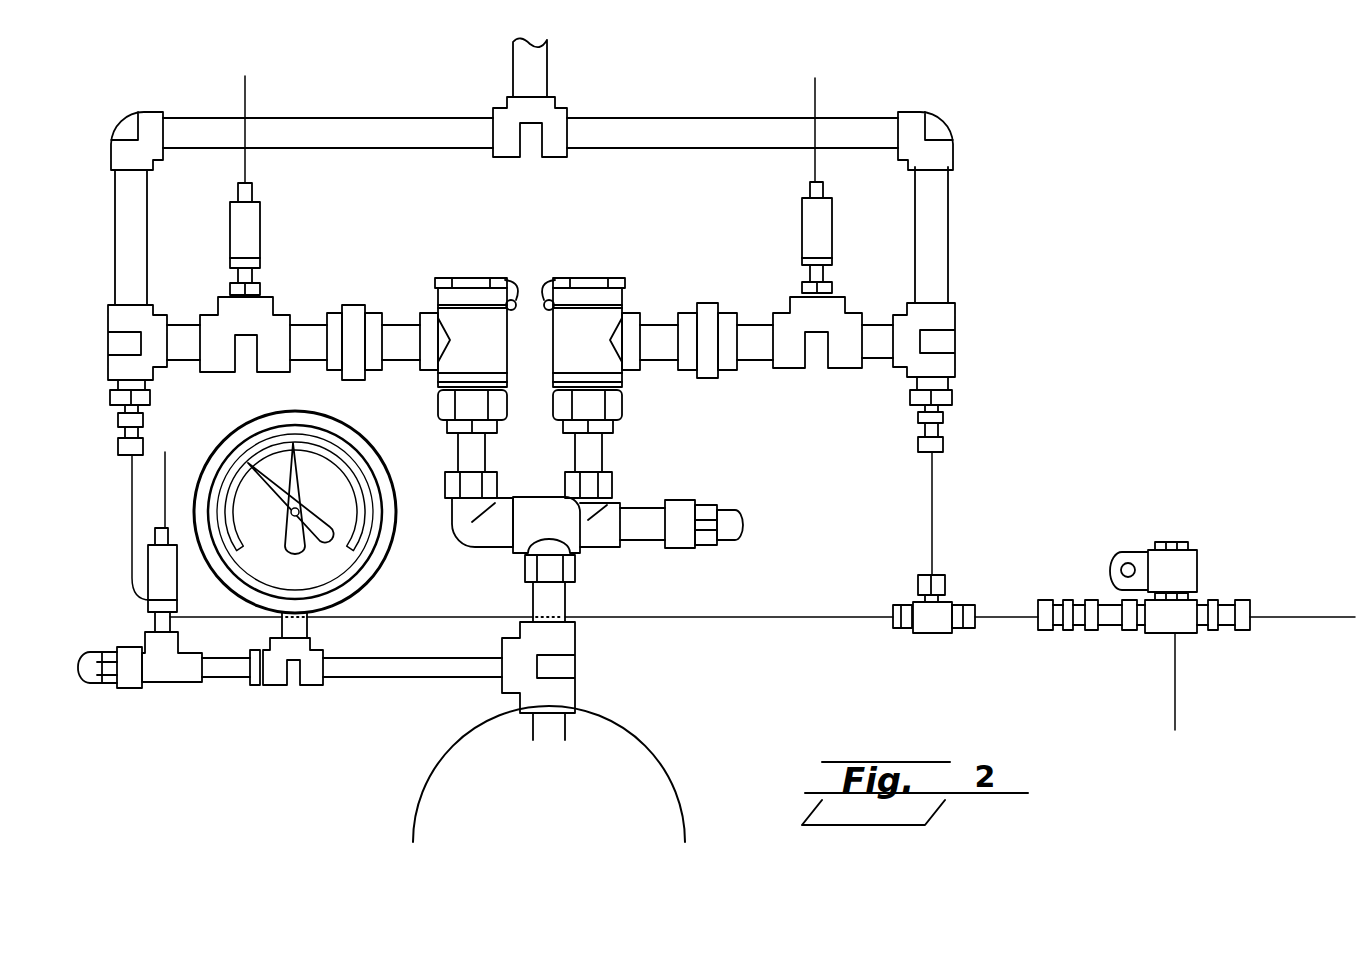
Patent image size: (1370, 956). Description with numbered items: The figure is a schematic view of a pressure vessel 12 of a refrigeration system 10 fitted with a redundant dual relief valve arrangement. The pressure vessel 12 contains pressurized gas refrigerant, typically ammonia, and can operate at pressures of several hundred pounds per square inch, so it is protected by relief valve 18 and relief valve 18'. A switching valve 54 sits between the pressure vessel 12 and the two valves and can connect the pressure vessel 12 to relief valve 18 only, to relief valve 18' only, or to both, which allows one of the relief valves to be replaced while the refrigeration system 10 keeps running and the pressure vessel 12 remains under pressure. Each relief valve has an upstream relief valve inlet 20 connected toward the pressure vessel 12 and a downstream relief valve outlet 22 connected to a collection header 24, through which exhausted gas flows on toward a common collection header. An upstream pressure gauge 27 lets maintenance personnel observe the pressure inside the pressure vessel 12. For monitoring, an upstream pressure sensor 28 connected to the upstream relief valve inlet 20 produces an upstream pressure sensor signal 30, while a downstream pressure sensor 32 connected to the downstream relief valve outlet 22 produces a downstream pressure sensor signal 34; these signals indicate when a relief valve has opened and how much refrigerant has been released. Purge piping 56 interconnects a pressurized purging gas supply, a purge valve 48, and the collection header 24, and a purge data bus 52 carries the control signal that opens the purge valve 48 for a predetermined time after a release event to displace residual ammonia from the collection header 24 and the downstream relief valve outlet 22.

The refrigeration system 10 is at (1108, 228).
The pressure vessel 12 is at (618, 754).
The relief valve 18 is at (469, 315).
The relief valve 18' is at (591, 314).
The upstream relief valve inlet 20 is at (455, 455).
The downstream relief valve outlet 22 is at (403, 322).
The collection header 24 is at (548, 72).
The upstream pressure gauge 27 is at (392, 535).
The upstream pressure sensor 28 is at (148, 556).
The upstream pressure sensor signal 30 is at (168, 478).
The downstream pressure sensor 32 is at (230, 242).
The downstream pressure sensor signal 34 is at (240, 107).
The purge valve 48 is at (1168, 542).
The purge data bus 52 is at (1177, 670).
The switching valve 54 is at (725, 503).
The purge piping 56 is at (130, 508).